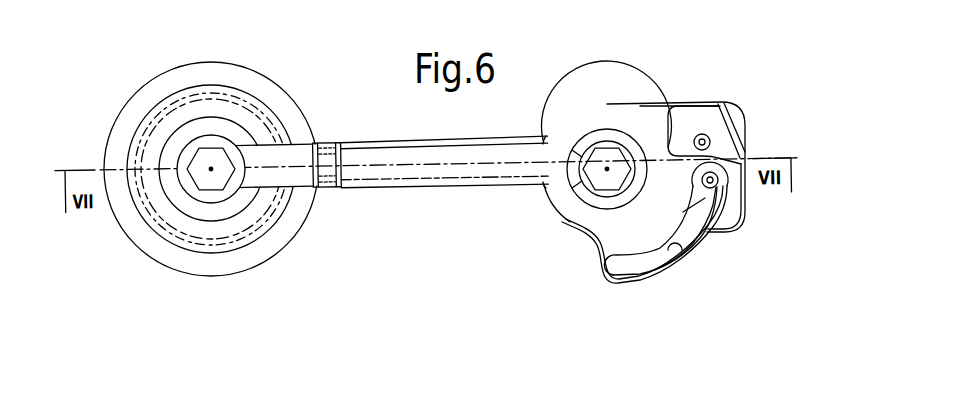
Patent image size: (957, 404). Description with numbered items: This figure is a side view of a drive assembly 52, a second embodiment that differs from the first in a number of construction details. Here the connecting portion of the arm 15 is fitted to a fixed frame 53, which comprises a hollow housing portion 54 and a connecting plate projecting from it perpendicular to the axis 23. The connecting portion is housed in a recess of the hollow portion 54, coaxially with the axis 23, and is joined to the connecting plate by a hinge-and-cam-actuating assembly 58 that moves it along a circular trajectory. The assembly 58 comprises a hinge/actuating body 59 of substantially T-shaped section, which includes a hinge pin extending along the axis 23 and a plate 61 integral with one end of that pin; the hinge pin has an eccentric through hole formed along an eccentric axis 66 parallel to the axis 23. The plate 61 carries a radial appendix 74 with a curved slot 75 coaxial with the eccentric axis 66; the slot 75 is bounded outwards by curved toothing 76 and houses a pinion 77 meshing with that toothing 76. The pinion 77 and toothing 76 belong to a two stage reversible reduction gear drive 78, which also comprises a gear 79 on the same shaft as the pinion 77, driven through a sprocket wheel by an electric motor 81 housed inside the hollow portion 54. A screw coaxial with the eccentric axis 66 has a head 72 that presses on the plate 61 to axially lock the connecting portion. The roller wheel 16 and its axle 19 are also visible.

The arm 15 is at (453, 195).
The roller wheel 16 is at (242, 80).
The axle 19 is at (209, 164).
The axis 23 is at (603, 228).
The drive assembly 52 is at (402, 138).
The fixed frame 53 is at (750, 118).
The hollow housing portion 54 is at (727, 114).
The hinge-and-cam-actuating assembly 58 is at (561, 230).
The hinge/actuating body 59 is at (584, 234).
The plate 61 is at (563, 196).
The eccentric axis 66 is at (596, 258).
The head 72 is at (588, 154).
The radial appendix 74 is at (667, 277).
The curved slot 75 is at (652, 282).
The curved toothing 76 is at (681, 248).
The pinion 77 is at (722, 232).
The two stage reversible reduction gear drive 78 is at (744, 184).
The gear 79 is at (743, 161).
The electric motor 81 is at (699, 121).